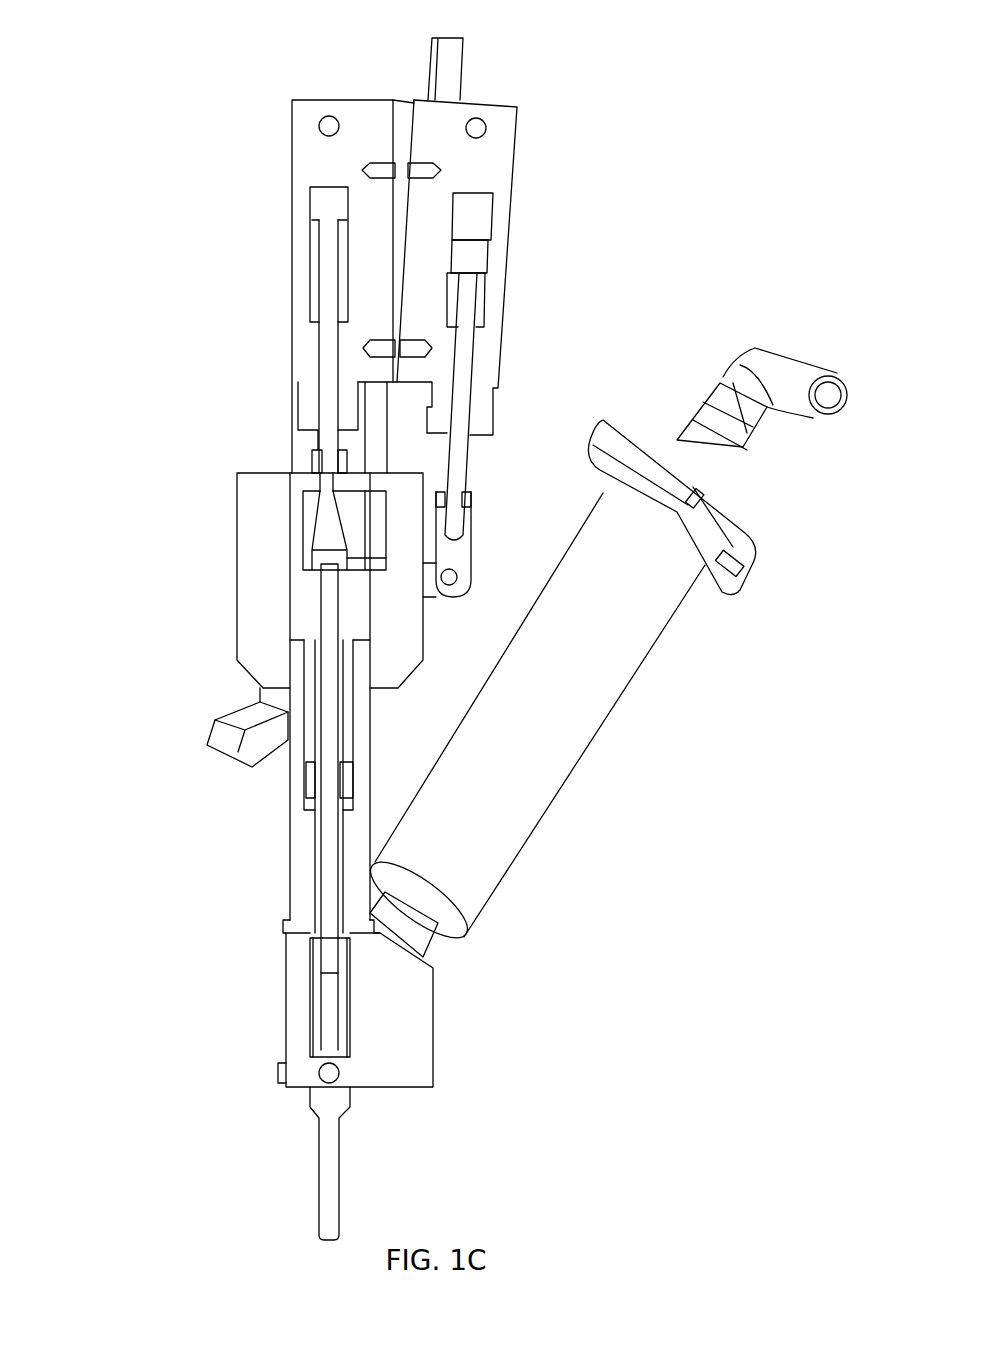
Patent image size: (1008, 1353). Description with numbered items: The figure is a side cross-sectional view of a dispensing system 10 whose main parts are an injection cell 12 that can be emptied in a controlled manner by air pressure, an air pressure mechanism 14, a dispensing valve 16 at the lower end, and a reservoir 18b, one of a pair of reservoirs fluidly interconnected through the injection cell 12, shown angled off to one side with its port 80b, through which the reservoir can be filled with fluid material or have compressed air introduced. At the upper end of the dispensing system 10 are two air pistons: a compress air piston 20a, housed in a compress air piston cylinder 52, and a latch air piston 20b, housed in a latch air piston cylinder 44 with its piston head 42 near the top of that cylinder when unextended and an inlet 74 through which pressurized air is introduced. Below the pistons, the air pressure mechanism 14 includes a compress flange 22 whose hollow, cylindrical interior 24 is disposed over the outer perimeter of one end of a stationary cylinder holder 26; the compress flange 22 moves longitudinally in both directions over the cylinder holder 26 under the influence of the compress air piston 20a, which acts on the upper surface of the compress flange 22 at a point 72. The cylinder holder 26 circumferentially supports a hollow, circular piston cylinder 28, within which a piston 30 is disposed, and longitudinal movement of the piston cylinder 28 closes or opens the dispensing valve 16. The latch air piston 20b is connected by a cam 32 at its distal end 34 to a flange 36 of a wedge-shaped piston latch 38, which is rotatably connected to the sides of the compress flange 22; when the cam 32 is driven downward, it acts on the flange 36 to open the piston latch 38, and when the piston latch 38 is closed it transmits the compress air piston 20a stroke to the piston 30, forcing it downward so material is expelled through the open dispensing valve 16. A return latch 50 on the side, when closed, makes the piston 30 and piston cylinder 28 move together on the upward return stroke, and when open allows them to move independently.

The dispensing system 10 is at (675, 107).
The injection cell 12 is at (262, 790).
The air pressure mechanism 14 is at (166, 423).
The dispensing valve 16 is at (362, 1110).
The reservoir 18b is at (600, 720).
The compress air piston 20a is at (330, 270).
The latch air piston 20b is at (473, 330).
The compress flange 22 is at (250, 630).
The hollow, cylindrical interior 24 is at (300, 577).
The cylinder holder 26 is at (355, 835).
The piston cylinder 28 is at (320, 990).
The piston 30 is at (330, 742).
The cam 32 is at (455, 555).
The distal end 34 is at (458, 452).
The flange 36 is at (430, 595).
The piston latch 38 is at (307, 520).
The piston head 42 is at (473, 258).
The latch air piston cylinder 44 is at (473, 217).
The return latch 50 is at (215, 733).
The compress air piston cylinder 52 is at (315, 232).
The point 72 is at (320, 450).
The inlet 74 is at (453, 60).
The port 80b is at (793, 392).